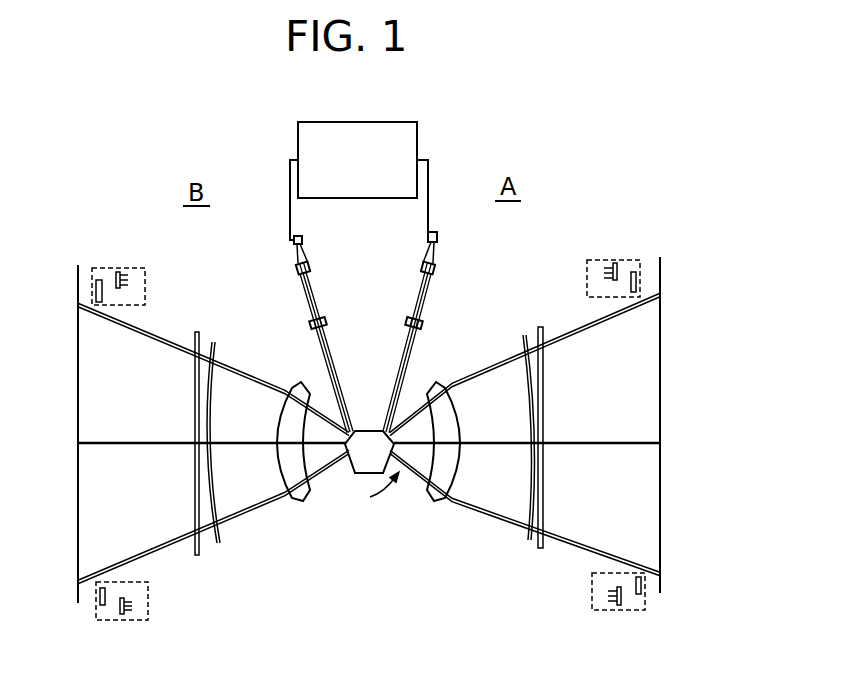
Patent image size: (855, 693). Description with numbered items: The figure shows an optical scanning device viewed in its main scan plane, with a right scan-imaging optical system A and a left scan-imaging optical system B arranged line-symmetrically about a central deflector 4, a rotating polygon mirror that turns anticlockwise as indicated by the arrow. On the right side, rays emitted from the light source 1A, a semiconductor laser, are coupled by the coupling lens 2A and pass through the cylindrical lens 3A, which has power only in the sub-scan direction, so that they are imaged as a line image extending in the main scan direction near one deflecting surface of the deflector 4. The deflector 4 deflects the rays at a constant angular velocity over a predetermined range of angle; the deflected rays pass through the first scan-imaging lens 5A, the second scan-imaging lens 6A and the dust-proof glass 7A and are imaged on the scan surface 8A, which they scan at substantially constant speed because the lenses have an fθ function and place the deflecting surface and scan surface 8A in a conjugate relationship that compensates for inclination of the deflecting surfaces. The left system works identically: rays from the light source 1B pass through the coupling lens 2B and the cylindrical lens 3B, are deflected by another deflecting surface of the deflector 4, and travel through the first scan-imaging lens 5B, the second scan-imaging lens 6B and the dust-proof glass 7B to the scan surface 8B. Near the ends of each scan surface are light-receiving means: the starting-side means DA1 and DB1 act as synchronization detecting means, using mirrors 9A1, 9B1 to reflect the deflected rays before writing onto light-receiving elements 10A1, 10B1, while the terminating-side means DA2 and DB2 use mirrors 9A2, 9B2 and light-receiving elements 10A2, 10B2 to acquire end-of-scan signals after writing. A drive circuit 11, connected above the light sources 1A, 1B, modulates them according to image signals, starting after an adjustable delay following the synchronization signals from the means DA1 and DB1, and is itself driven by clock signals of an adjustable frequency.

The drive circuit 11 is at (418, 142).
The light source 1A is at (439, 238).
The light source 1B is at (304, 240).
The coupling lens 2A is at (437, 270).
The coupling lens 2B is at (312, 268).
The cylindrical lens 3A is at (423, 326).
The cylindrical lens 3B is at (326, 323).
The deflector 4 is at (359, 474).
The first scan-imaging lens 5A is at (436, 501).
The first scan-imaging lens 5B is at (300, 501).
The second scan-imaging lens 6A is at (528, 541).
The second scan-imaging lens 6B is at (218, 538).
The dust-proof glass 7A is at (542, 549).
The dust-proof glass 7B is at (200, 548).
The scan surface 8A is at (661, 592).
The scan surface 8B is at (78, 604).
The mirror 9A1 is at (641, 592).
The mirror 9A2 is at (638, 282).
The mirror 9B1 is at (96, 280).
The mirror 9B2 is at (103, 606).
The light-receiving element 10A1 is at (608, 590).
The light-receiving element 10A2 is at (610, 270).
The light-receiving element 10B1 is at (130, 290).
The light-receiving element 10B2 is at (146, 583).
The starting-side light receiving means DA1 is at (626, 612).
The terminating-side light receiving means DA2 is at (615, 262).
The starting-side light receiving means DB1 is at (126, 272).
The terminating-side light receiving means DB2 is at (128, 616).